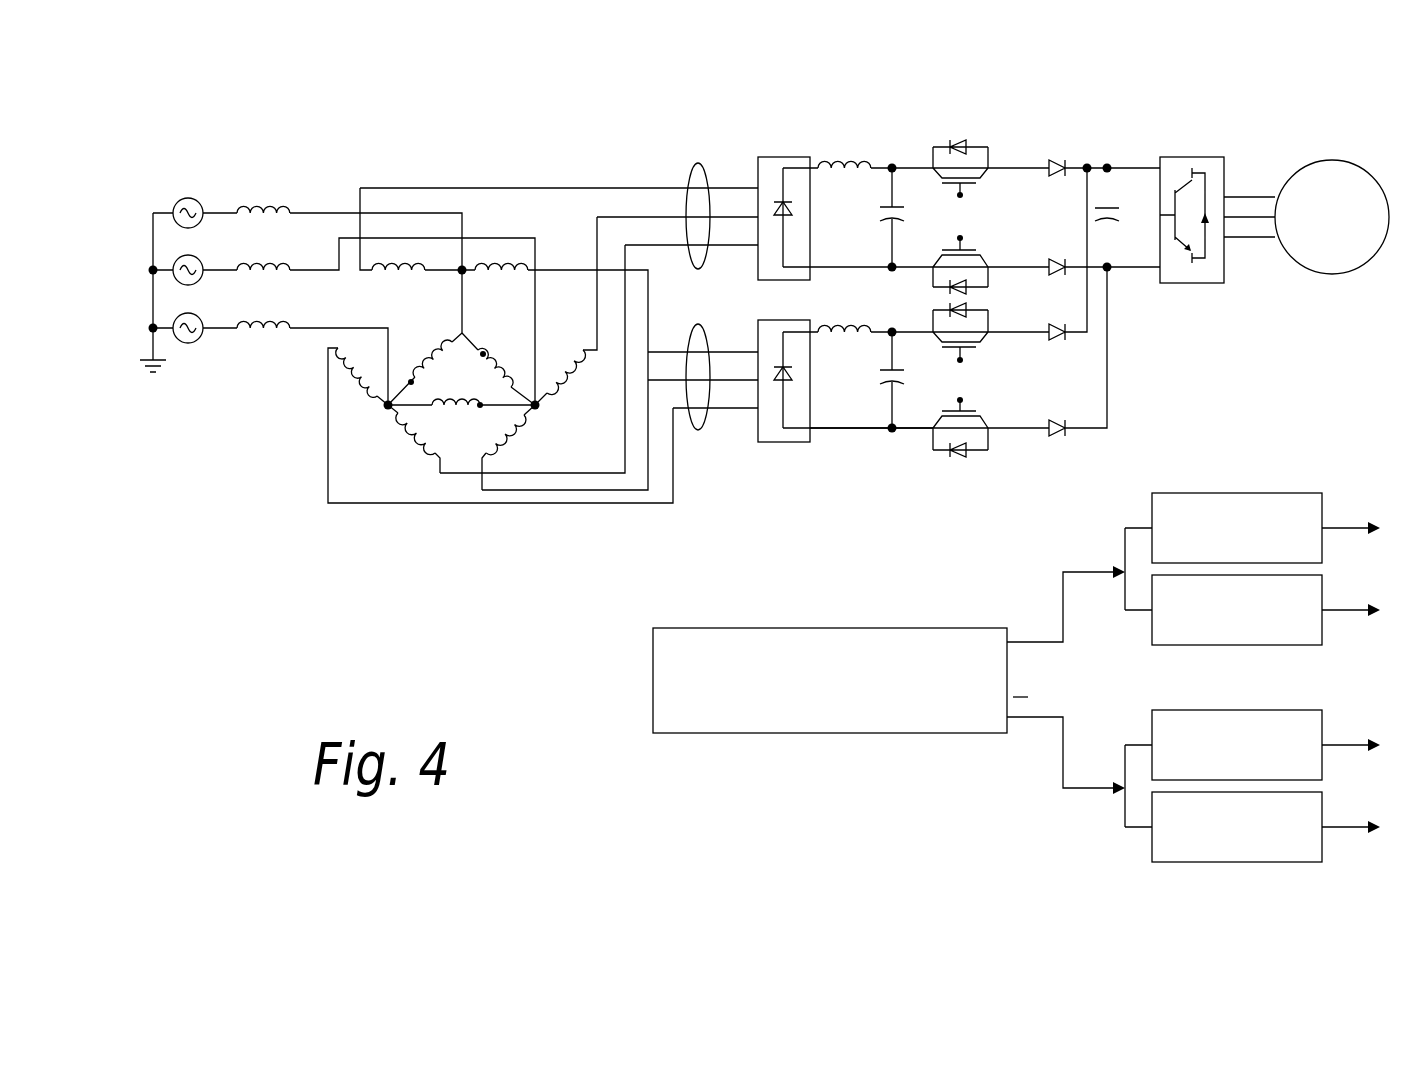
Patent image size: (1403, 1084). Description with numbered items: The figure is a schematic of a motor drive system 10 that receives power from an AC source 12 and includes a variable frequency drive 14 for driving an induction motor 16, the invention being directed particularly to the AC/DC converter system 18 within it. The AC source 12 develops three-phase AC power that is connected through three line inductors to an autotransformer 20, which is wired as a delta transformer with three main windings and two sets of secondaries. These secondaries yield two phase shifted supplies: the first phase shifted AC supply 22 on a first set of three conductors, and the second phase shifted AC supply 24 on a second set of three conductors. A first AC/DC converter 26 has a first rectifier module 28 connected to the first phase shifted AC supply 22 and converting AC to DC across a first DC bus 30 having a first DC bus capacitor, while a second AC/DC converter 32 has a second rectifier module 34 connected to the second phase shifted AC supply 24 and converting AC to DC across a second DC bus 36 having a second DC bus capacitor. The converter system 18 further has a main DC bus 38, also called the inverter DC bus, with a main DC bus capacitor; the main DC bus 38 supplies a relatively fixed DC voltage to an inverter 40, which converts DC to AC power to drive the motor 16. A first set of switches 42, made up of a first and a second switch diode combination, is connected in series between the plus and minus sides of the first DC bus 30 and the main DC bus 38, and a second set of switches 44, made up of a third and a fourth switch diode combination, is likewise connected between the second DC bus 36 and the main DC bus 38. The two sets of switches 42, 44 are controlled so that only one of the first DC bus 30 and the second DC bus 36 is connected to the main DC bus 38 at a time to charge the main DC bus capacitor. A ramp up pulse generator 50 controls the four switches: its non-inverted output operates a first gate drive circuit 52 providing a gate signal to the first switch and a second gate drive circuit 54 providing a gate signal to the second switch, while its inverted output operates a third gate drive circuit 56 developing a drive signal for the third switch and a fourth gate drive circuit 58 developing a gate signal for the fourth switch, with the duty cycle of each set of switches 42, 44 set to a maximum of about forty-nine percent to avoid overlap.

The motor drive system 10 is at (417, 142).
The AC source 12 is at (179, 174).
The variable frequency drive 14 is at (588, 550).
The induction motor 16 is at (1320, 267).
The AC/DC converter system 18 is at (879, 470).
The autotransformer 20 is at (482, 423).
The first phase shifted AC supply 22 is at (688, 177).
The second phase shifted AC supply 24 is at (700, 430).
The first AC/DC converter 26 is at (953, 131).
The first rectifier module 28 is at (758, 158).
The first DC bus 30 is at (892, 158).
The second AC/DC converter 32 is at (997, 464).
The second rectifier module 34 is at (758, 442).
The second DC bus 36 is at (842, 440).
The main DC bus 38 is at (1145, 152).
The inverter 40 is at (1213, 158).
The first set of switches 42 is at (1006, 185).
The second set of switches 44 is at (1004, 347).
The ramp up pulse generator 50 is at (813, 733).
The first gate drive circuit 52 is at (1287, 493).
The second gate drive circuit 54 is at (1282, 645).
The third gate drive circuit 56 is at (1237, 710).
The fourth gate drive circuit 58 is at (1300, 862).